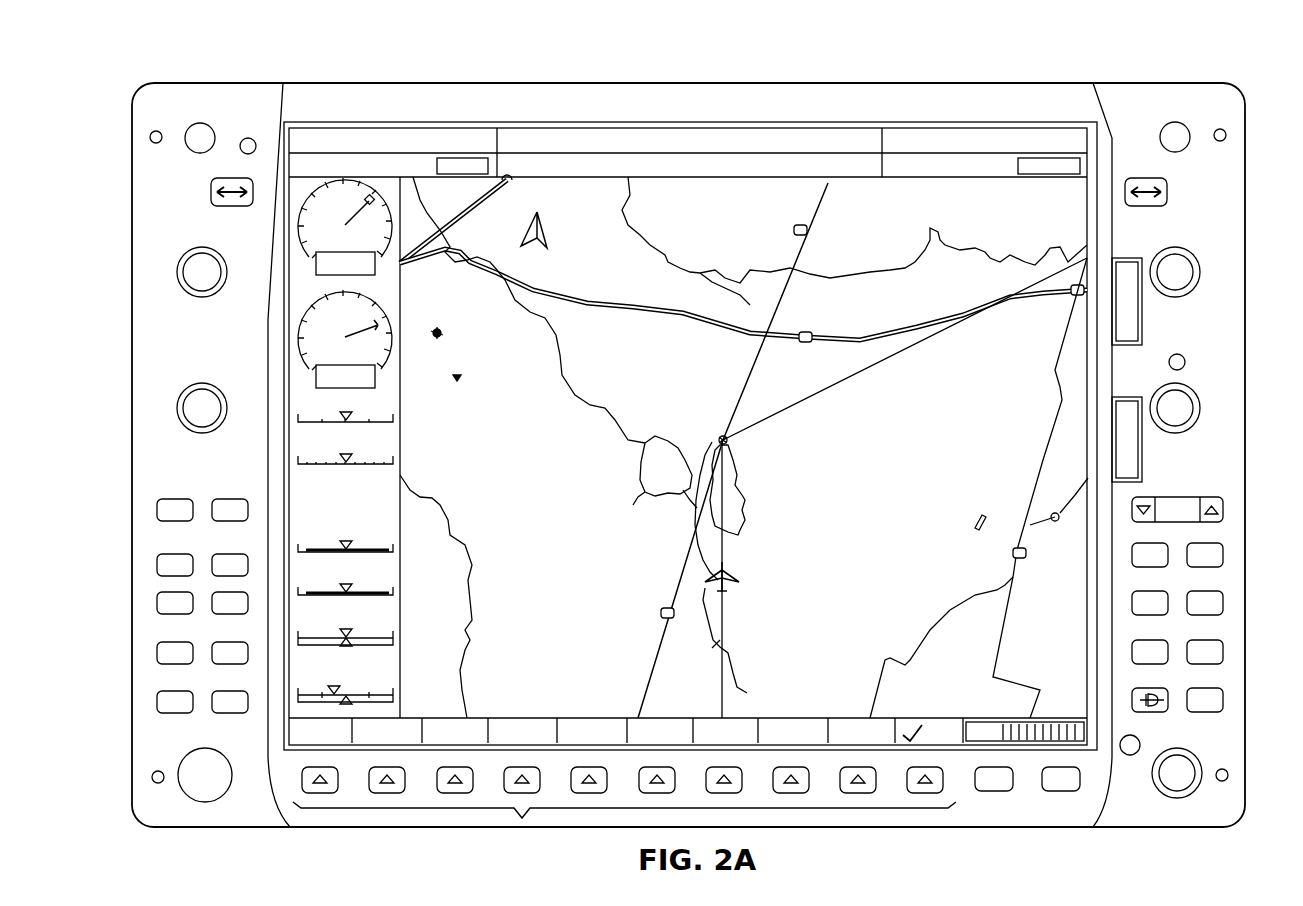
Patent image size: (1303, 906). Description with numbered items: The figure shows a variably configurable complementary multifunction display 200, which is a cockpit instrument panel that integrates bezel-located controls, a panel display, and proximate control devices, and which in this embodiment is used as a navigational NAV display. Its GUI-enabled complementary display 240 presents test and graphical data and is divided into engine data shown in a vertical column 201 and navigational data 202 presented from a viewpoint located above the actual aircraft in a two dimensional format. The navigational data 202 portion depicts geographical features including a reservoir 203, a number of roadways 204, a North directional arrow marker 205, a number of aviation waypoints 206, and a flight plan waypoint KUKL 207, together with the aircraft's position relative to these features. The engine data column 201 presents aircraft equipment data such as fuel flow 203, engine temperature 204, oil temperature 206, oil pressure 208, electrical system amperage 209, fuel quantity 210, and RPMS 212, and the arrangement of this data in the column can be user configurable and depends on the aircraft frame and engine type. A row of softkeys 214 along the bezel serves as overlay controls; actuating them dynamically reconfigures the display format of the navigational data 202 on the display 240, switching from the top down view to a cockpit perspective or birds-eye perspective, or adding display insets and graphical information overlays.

The multifunction display 200 is at (1266, 121).
The engine data column 201 is at (288, 472).
The navigational data 202 is at (879, 489).
The reservoir 203 is at (391, 413).
The roadways 204 is at (391, 455).
The North directional arrow marker 205 is at (549, 230).
The aviation waypoints 206 is at (391, 545).
The flight plan waypoint 207 is at (740, 445).
The oil pressure 208 is at (736, 572).
The electrical system amperage 209 is at (391, 630).
The fuel quantity 210 is at (391, 687).
The RPMS 212 is at (375, 305).
The softkeys 214 is at (522, 818).
The complementary display 240 is at (848, 196).